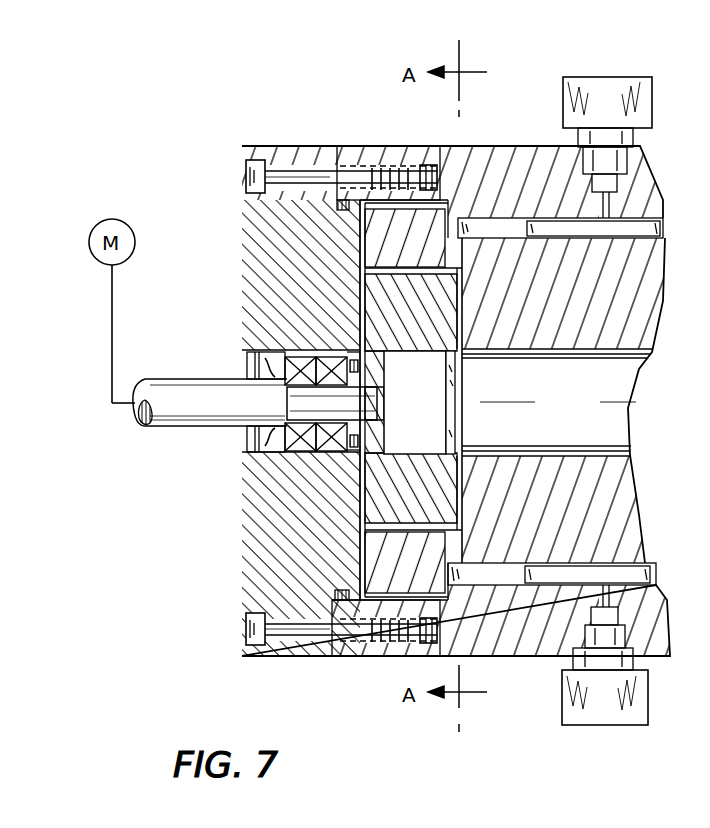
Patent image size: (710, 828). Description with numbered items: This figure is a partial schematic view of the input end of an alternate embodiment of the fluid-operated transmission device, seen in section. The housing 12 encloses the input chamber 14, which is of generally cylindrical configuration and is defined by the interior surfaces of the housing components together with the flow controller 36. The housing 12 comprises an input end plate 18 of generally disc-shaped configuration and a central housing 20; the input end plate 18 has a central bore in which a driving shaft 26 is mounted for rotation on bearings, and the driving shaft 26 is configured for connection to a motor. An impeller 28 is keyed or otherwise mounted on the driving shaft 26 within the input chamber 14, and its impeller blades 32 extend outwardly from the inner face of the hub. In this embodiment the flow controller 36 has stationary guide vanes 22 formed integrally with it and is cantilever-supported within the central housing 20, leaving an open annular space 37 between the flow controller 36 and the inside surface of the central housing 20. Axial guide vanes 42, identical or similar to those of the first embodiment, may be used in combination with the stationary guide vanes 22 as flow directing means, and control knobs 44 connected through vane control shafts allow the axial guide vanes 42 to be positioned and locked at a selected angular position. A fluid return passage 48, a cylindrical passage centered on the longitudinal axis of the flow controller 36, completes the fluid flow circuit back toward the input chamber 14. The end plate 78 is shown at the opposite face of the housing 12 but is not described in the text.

The housing 12 is at (560, 662).
The input chamber 14 is at (432, 455).
The input end plate 18 is at (270, 548).
The central housing 20 is at (437, 150).
The stationary guide vanes 22 is at (385, 237).
The driving shaft 26 is at (232, 403).
The impeller 28 is at (372, 330).
The impeller blades 32 is at (413, 351).
The flow controller 36 is at (612, 488).
The open annular space 37 is at (492, 224).
The axial guide vanes 42 is at (560, 232).
The control knobs 44 is at (572, 100).
The fluid return passage 48 is at (590, 420).
The bottom end plate 78 is at (310, 628).